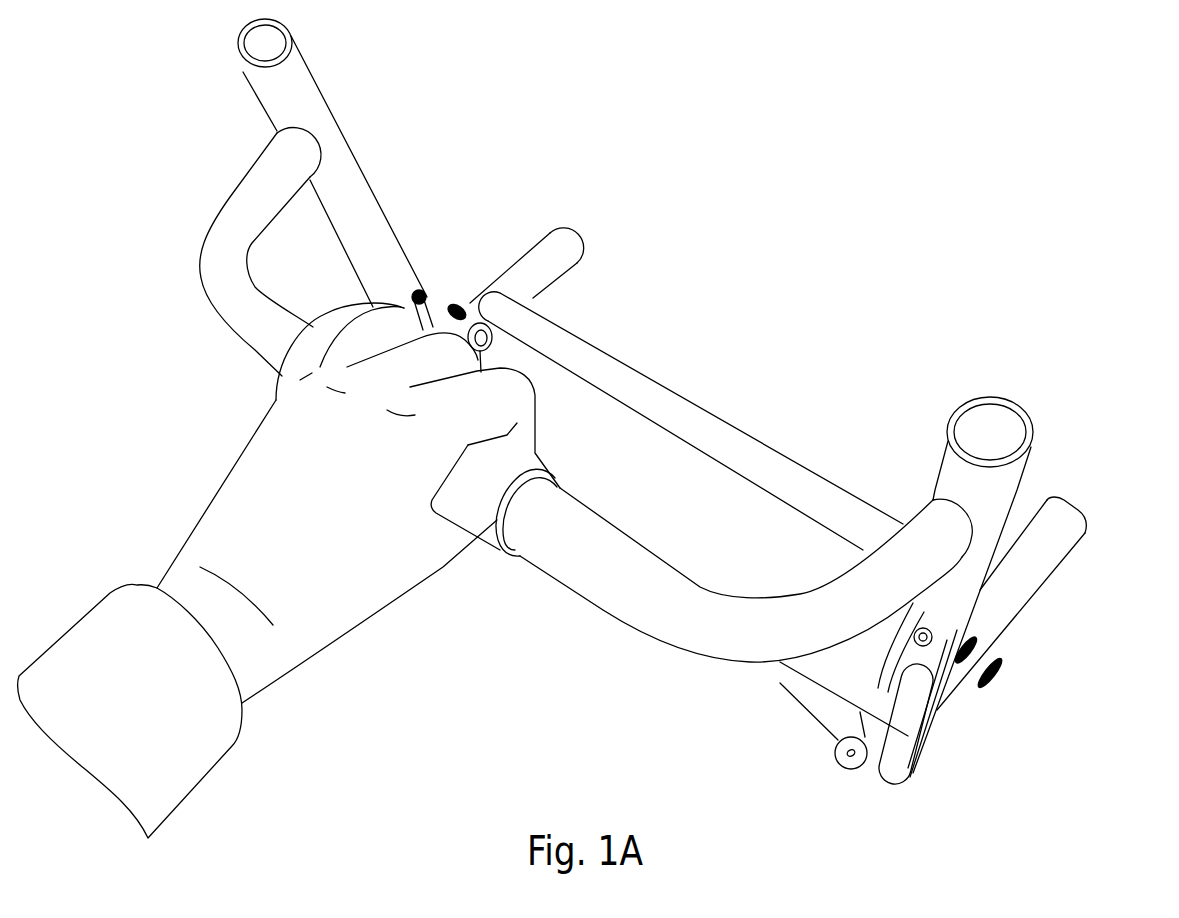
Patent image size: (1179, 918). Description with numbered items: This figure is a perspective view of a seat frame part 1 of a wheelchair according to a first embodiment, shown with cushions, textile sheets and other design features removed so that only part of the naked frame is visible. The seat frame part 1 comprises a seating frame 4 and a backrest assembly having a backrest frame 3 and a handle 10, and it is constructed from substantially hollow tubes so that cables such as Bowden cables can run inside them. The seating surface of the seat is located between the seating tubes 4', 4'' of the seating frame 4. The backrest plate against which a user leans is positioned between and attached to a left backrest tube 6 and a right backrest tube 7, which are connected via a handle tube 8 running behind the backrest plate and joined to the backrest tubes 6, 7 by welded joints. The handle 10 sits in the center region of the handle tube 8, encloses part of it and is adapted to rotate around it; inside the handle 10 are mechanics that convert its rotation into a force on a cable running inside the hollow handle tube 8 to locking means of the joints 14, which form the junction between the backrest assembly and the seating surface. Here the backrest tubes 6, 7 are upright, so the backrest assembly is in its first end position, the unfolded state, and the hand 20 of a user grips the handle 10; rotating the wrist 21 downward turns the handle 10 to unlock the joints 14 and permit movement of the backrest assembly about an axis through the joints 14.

The seat frame part 1 is at (917, 302).
The backrest frame 3 is at (1027, 487).
The seating frame 4 is at (691, 420).
The seating tube 4' is at (567, 227).
The seating tube 4'' is at (1031, 603).
The left backrest tube 6 is at (290, 110).
The right backrest tube 7 is at (988, 482).
The handle tube 8 is at (701, 636).
The handle 10 is at (483, 512).
The joints 14 is at (417, 301).
The hand 20 is at (425, 596).
The wrist 21 is at (252, 650).